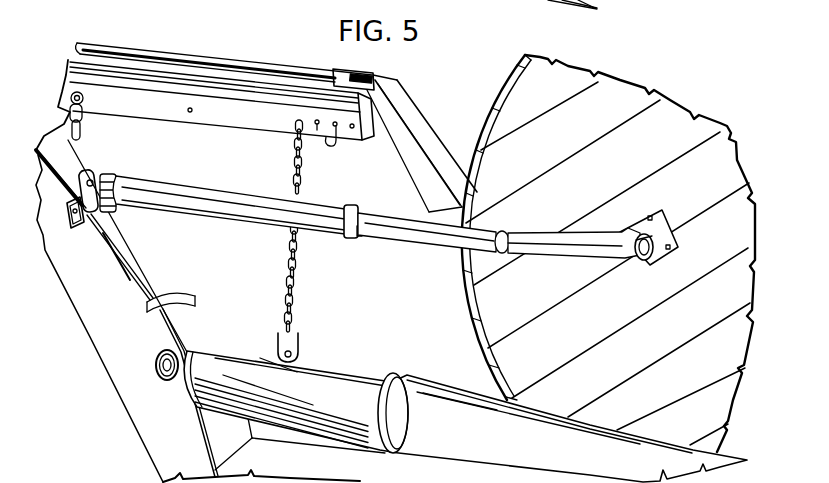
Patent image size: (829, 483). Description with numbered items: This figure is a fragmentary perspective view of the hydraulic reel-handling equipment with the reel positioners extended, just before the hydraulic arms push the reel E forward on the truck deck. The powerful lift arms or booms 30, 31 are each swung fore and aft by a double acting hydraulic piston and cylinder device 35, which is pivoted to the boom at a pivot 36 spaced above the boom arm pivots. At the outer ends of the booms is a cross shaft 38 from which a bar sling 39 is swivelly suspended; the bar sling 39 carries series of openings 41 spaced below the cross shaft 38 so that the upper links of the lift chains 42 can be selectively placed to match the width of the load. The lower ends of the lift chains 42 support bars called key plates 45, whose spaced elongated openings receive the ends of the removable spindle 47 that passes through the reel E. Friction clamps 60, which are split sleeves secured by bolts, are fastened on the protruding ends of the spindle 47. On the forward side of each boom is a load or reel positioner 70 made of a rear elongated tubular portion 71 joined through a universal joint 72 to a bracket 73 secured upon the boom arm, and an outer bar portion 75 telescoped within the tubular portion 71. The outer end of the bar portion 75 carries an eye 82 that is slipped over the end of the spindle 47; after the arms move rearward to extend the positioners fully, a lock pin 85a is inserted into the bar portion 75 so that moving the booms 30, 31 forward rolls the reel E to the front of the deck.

The lift arm or boom 30 is at (410, 117).
The lift arm or boom 31 is at (82, 162).
The double acting hydraulic piston and cylinder device 35 is at (335, 390).
The pivot 36 is at (158, 362).
The cross shaft 38 is at (213, 60).
The bar sling 39 is at (225, 116).
The openings 41 is at (364, 132).
The lift chains 42 is at (287, 175).
The key plate 45 is at (303, 354).
The spindle or shaft 47 is at (572, 244).
The friction clamp 60 is at (630, 260).
The load positioner or reel positioner 70 is at (251, 216).
The rear elongated tubular portion 71 is at (168, 194).
The universal joint 72 is at (112, 178).
The bracket 73 is at (80, 224).
The outer bar portion 75 is at (389, 232).
The eye 82 is at (647, 262).
The lock pin 85a is at (355, 206).
The reel E is at (675, 118).